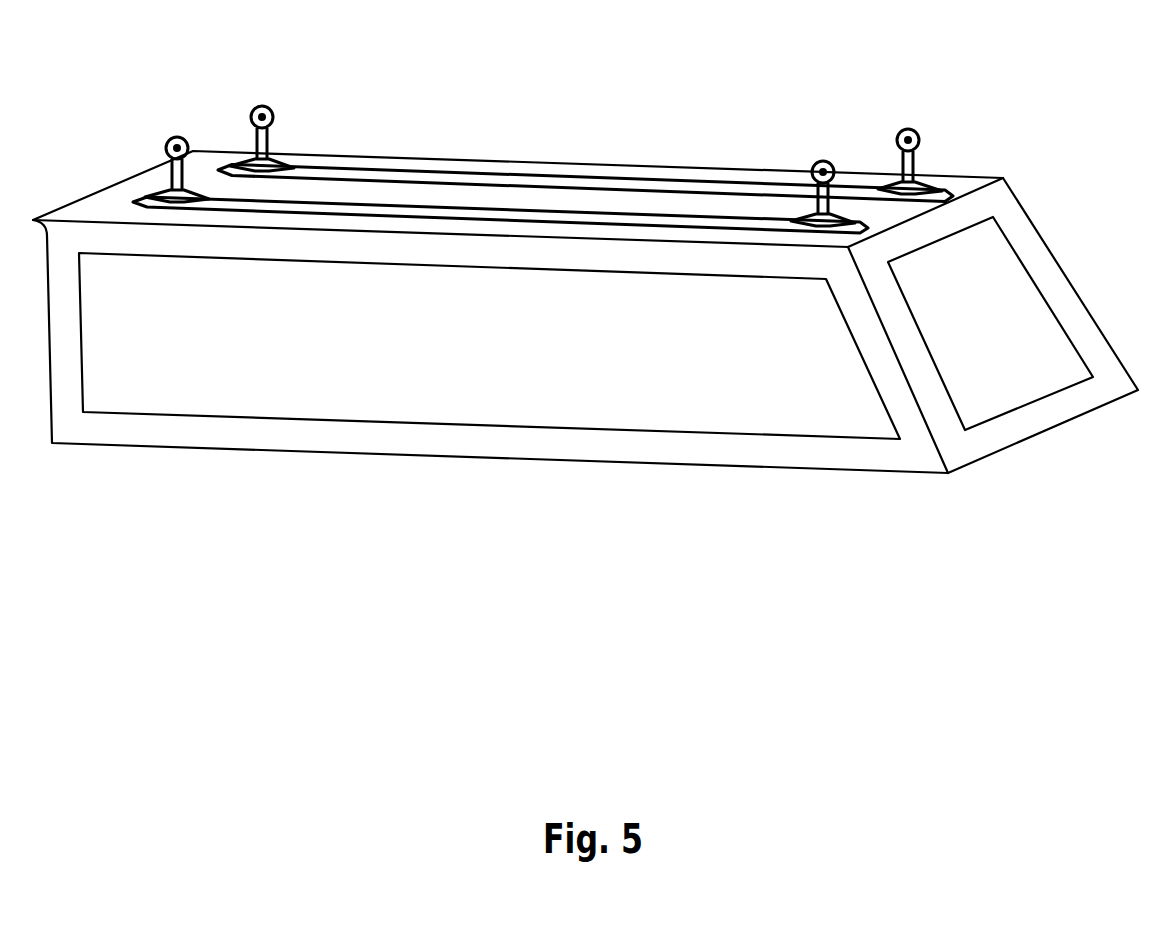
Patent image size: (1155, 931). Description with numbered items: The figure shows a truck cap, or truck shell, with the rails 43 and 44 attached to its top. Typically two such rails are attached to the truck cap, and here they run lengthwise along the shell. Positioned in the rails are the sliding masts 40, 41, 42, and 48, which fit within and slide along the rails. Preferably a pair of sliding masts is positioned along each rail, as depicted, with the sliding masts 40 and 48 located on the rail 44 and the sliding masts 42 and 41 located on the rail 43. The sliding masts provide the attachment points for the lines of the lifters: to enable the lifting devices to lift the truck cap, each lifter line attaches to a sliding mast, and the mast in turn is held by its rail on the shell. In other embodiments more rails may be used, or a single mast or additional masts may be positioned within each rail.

The sliding mast 40 is at (263, 105).
The sliding mast 41 is at (823, 160).
The sliding mast 42 is at (178, 137).
The sliding mast 48 is at (908, 128).
The rail 43 is at (522, 208).
The rail 44 is at (400, 168).